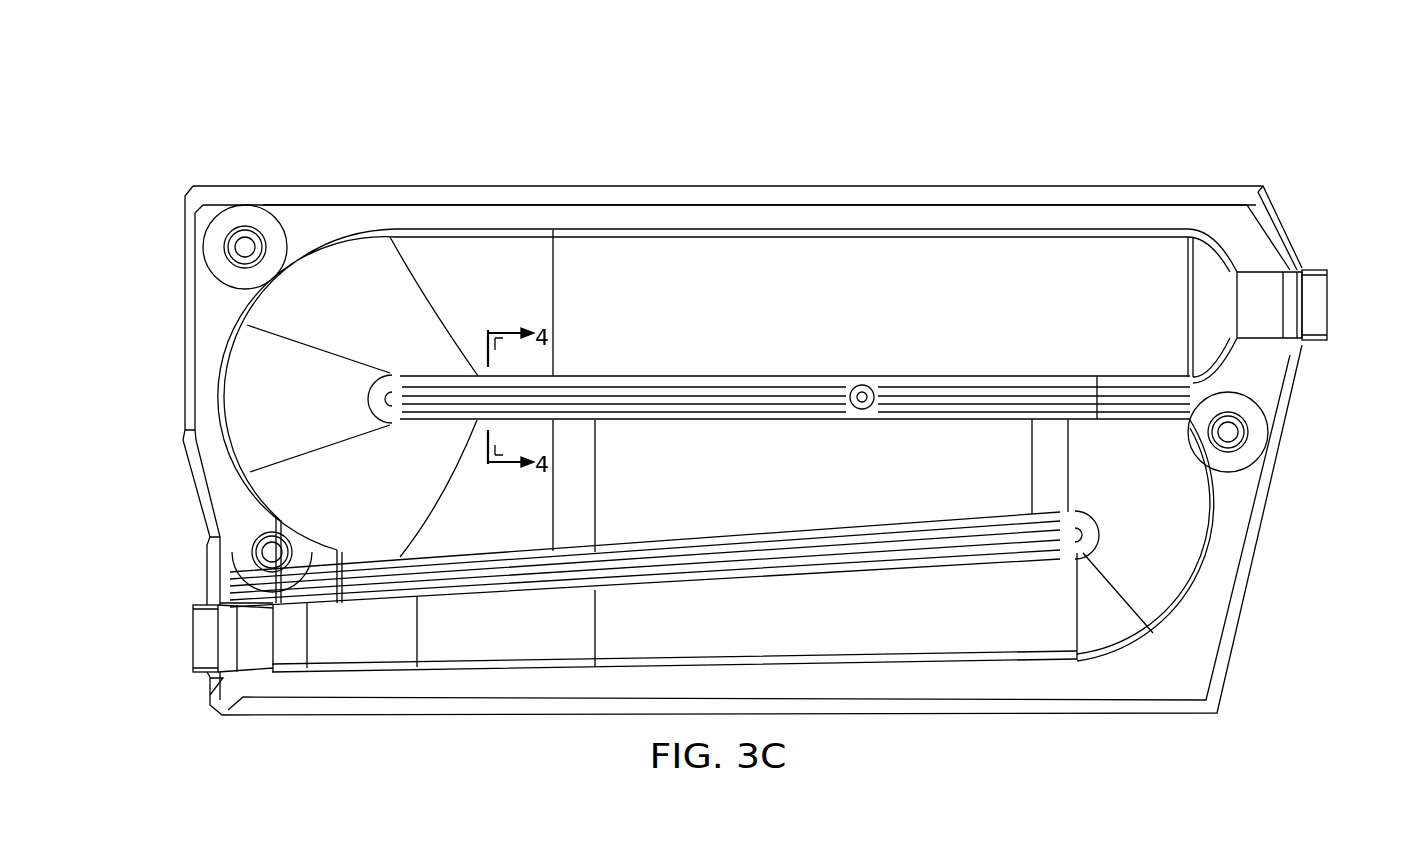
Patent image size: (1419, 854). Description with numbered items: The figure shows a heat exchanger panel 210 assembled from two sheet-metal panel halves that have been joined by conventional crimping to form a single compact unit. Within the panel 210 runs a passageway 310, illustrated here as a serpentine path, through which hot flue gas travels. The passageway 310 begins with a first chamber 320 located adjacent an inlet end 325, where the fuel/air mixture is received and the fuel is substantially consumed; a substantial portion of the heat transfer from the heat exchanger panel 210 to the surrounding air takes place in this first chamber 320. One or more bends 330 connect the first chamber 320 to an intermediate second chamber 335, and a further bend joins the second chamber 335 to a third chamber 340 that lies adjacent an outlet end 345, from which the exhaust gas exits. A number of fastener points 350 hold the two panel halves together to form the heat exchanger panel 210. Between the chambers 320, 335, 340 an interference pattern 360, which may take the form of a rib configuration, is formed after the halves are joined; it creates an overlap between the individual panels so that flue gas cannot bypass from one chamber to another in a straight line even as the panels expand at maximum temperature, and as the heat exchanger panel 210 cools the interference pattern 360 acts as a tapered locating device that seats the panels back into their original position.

The heat exchanger panel 210 is at (171, 118).
The passageway 310 is at (746, 224).
The first chamber 320 is at (907, 321).
The inlet end 325 is at (1328, 306).
The bend 330 is at (279, 412).
The second chamber 335 is at (814, 489).
The third chamber 340 is at (841, 621).
The outlet end 345 is at (193, 640).
The fastener point 350 is at (243, 207).
The interference pattern 360 is at (766, 385).